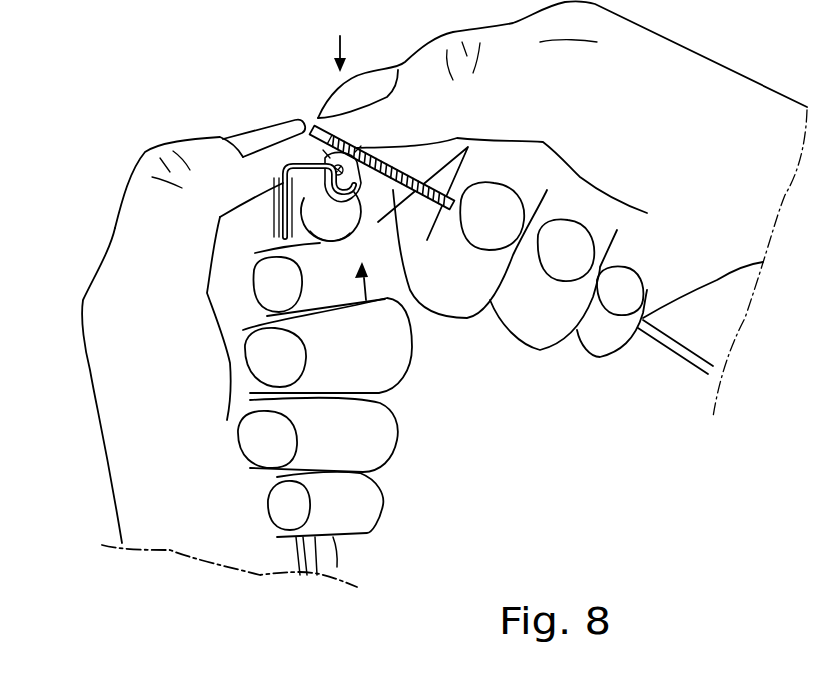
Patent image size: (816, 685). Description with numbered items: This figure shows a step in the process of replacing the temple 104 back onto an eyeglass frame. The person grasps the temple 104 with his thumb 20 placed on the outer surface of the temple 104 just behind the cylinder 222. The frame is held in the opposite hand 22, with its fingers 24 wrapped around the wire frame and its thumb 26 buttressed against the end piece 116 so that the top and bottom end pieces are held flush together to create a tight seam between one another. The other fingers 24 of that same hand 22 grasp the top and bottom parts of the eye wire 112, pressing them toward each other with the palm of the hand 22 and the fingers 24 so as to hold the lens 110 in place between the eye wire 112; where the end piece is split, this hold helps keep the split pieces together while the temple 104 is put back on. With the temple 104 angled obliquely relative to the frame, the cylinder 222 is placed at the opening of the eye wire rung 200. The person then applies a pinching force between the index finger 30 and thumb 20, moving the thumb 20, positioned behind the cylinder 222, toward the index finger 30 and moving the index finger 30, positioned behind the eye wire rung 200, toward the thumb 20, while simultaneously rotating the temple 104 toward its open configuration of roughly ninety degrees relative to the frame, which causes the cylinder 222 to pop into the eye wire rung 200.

The thumb 20 is at (413, 68).
The opposite hand 22 is at (85, 320).
The fingers 24 is at (390, 437).
The thumb 26 is at (202, 150).
The index finger 30 is at (395, 192).
The temple 104 is at (683, 353).
The lens 110 is at (333, 567).
The eye wire 112 is at (305, 566).
The end piece 116 is at (330, 158).
The eye wire rung 200 is at (345, 200).
The cylinder 222 is at (318, 152).